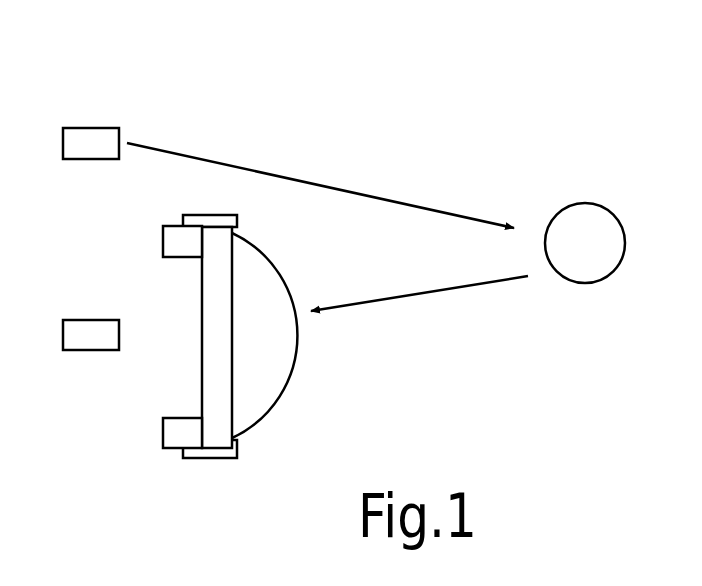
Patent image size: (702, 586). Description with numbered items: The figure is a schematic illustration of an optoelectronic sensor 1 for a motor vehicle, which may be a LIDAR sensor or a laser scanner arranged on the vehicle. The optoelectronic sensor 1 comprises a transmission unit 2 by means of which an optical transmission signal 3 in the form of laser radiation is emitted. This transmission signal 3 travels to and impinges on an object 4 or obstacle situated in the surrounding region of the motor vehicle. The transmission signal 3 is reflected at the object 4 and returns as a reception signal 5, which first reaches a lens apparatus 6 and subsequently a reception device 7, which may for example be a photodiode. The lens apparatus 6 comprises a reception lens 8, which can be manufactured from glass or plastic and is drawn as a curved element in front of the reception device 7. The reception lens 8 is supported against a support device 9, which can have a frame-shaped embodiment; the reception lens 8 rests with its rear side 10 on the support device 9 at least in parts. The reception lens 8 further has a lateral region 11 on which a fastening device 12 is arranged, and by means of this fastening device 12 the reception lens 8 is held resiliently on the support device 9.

The optoelectronic sensor 1 is at (196, 100).
The transmission unit 2 is at (92, 128).
The transmission signal 3 is at (341, 190).
The object 4 is at (585, 204).
The reception signal 5 is at (418, 298).
The lens apparatus 6 is at (200, 465).
The reception device 7 is at (92, 320).
The reception lens 8 is at (276, 410).
The support device 9 is at (163, 432).
The rear side 10 is at (200, 302).
The lateral region 11 is at (215, 221).
The fastening device 12 is at (222, 460).